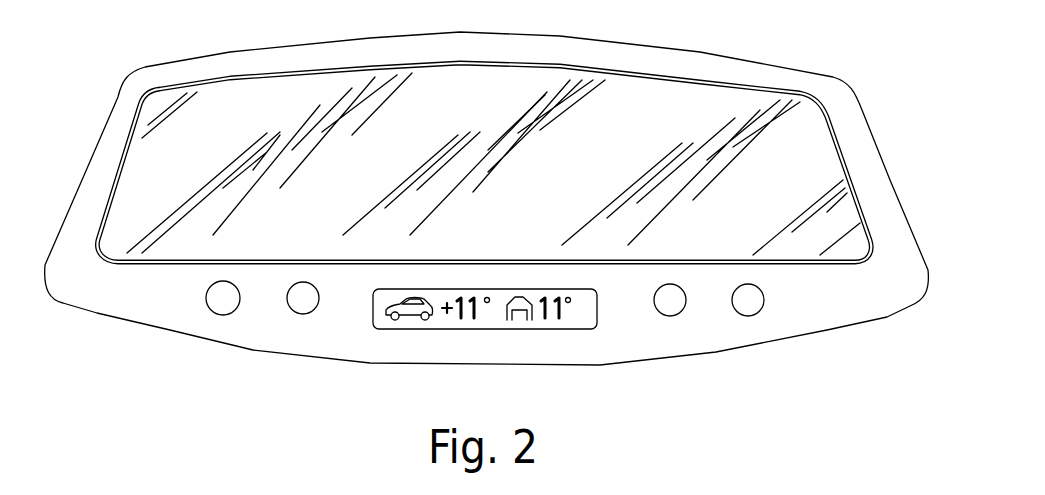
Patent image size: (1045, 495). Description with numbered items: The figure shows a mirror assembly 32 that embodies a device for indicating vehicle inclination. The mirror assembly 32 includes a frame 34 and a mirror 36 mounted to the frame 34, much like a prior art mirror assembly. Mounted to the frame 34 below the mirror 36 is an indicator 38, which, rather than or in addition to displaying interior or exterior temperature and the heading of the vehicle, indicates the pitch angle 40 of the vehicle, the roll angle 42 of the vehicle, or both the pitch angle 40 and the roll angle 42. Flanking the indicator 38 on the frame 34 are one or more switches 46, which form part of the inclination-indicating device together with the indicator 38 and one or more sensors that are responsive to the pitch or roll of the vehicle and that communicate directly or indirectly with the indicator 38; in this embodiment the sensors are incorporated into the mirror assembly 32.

The mirror assembly 32 is at (873, 104).
The frame 34 is at (877, 167).
The mirror 36 is at (810, 127).
The indicator 38 is at (497, 321).
The pitch angle 40 is at (445, 319).
The roll angle 42 is at (568, 319).
The switches 46 is at (223, 305).